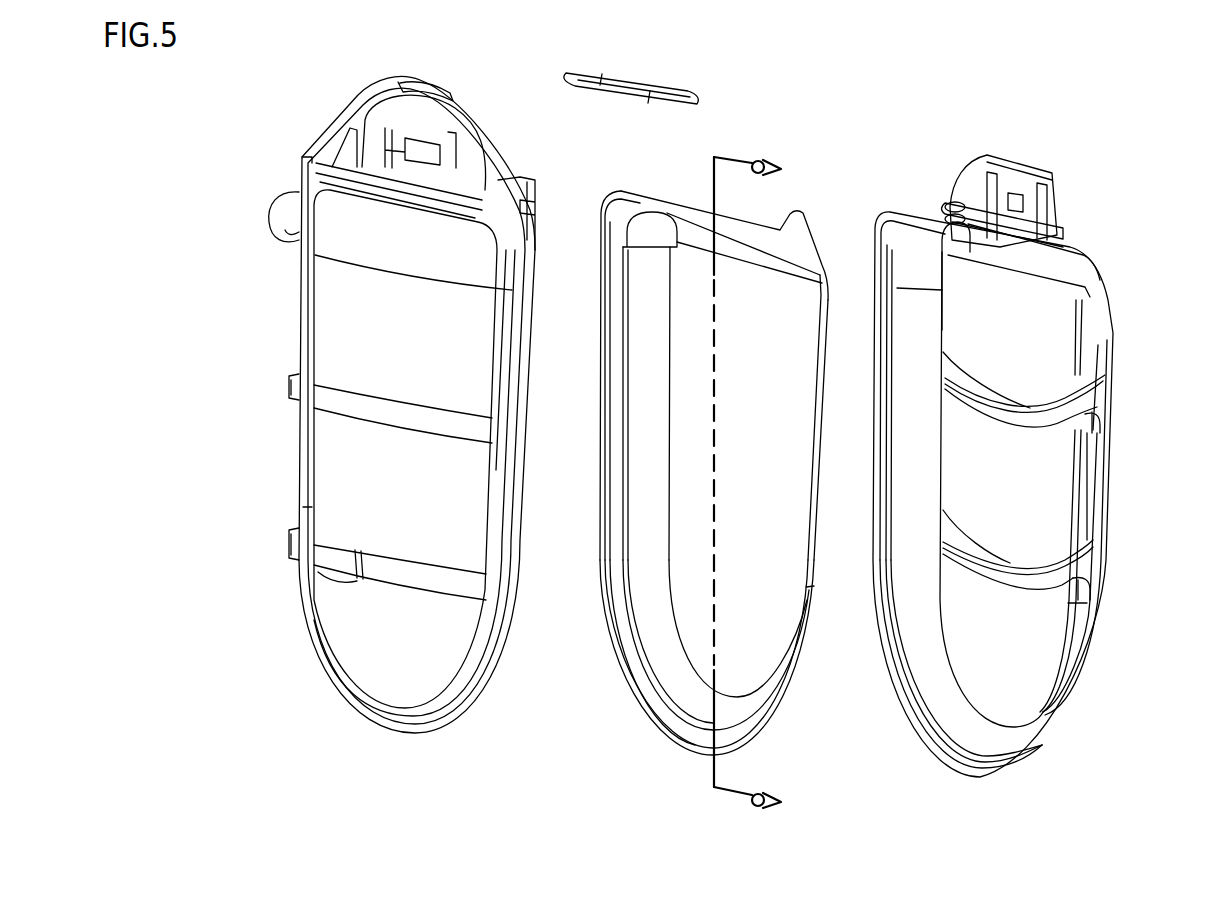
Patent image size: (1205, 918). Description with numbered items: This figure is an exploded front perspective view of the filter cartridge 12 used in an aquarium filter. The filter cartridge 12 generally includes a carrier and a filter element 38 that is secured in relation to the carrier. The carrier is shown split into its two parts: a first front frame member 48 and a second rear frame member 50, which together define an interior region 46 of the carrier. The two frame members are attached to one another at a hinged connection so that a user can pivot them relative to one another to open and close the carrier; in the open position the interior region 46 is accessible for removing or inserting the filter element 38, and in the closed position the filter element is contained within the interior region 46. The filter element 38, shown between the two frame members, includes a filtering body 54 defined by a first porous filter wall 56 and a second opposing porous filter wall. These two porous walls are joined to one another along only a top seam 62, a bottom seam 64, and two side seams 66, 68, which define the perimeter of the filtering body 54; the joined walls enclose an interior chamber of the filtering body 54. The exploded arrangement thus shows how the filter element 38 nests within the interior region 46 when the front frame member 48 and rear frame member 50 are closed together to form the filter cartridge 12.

The filter cartridge 12 is at (1042, 60).
The second rear frame member 50 is at (256, 166).
The interior region 46 is at (392, 371).
The filter element 38 is at (606, 166).
The top seam 62 is at (677, 205).
The side seam 66 is at (600, 445).
The filtering body 54 is at (788, 367).
The side seam 68 is at (816, 516).
The first porous filter wall 56 is at (773, 623).
The bottom seam 64 is at (668, 745).
The first front frame member 48 is at (1112, 233).